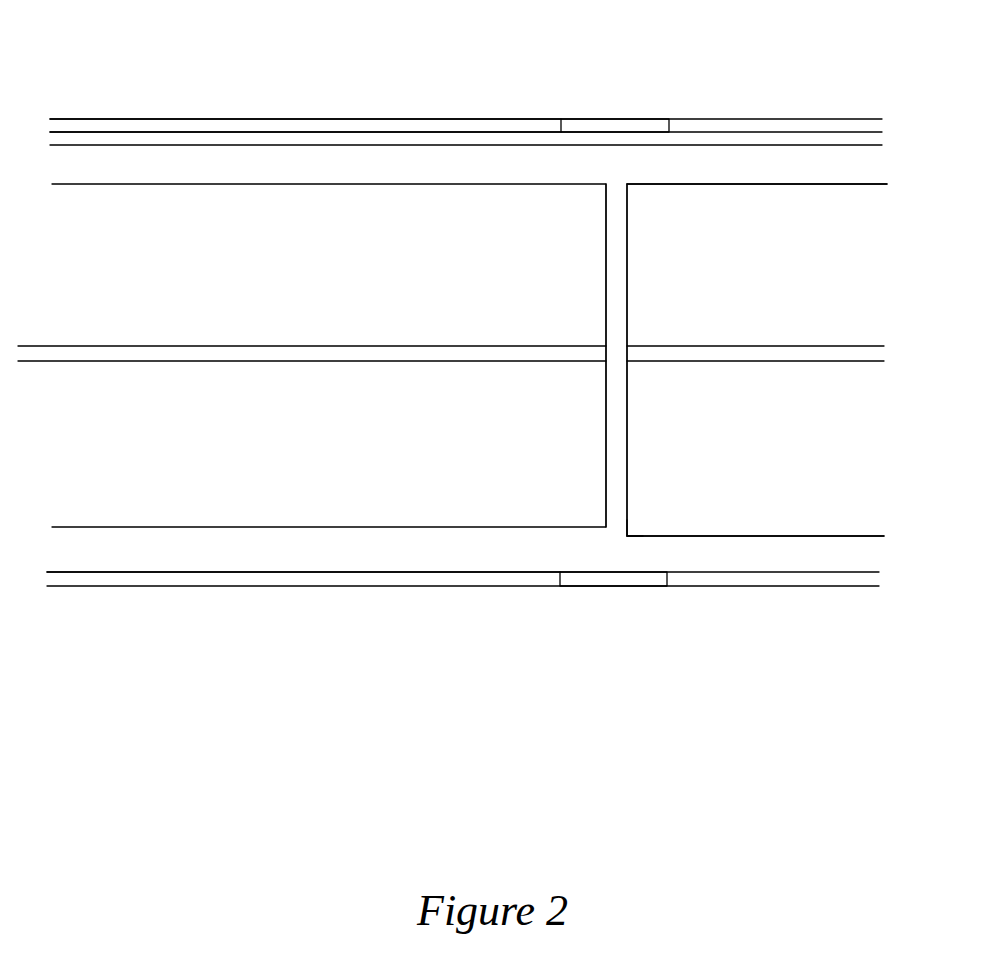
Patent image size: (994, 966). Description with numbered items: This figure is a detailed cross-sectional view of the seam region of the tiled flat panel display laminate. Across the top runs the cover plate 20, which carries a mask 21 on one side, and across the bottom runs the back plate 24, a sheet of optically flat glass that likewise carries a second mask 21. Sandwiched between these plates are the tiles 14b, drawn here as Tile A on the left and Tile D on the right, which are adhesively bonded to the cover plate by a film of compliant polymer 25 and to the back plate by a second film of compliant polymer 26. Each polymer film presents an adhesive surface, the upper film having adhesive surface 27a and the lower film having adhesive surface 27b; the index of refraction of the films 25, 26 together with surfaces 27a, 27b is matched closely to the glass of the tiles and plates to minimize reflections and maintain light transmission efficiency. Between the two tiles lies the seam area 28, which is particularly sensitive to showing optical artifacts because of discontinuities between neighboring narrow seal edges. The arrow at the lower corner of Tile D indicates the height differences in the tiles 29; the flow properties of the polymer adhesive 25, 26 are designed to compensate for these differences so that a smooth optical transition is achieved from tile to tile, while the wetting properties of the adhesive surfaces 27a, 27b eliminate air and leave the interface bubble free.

The tile 14b is at (258, 326).
The cover plate 20 is at (530, 126).
The mask 21 is at (660, 118).
The back plate 24 is at (400, 578).
The compliant polymer film 25 is at (138, 167).
The compliant polymer film 26 is at (257, 553).
The adhesive surface 27a is at (692, 185).
The adhesive surface 27b is at (782, 537).
The seam area 28 is at (606, 256).
The height differences in the tiles 29 is at (629, 533).